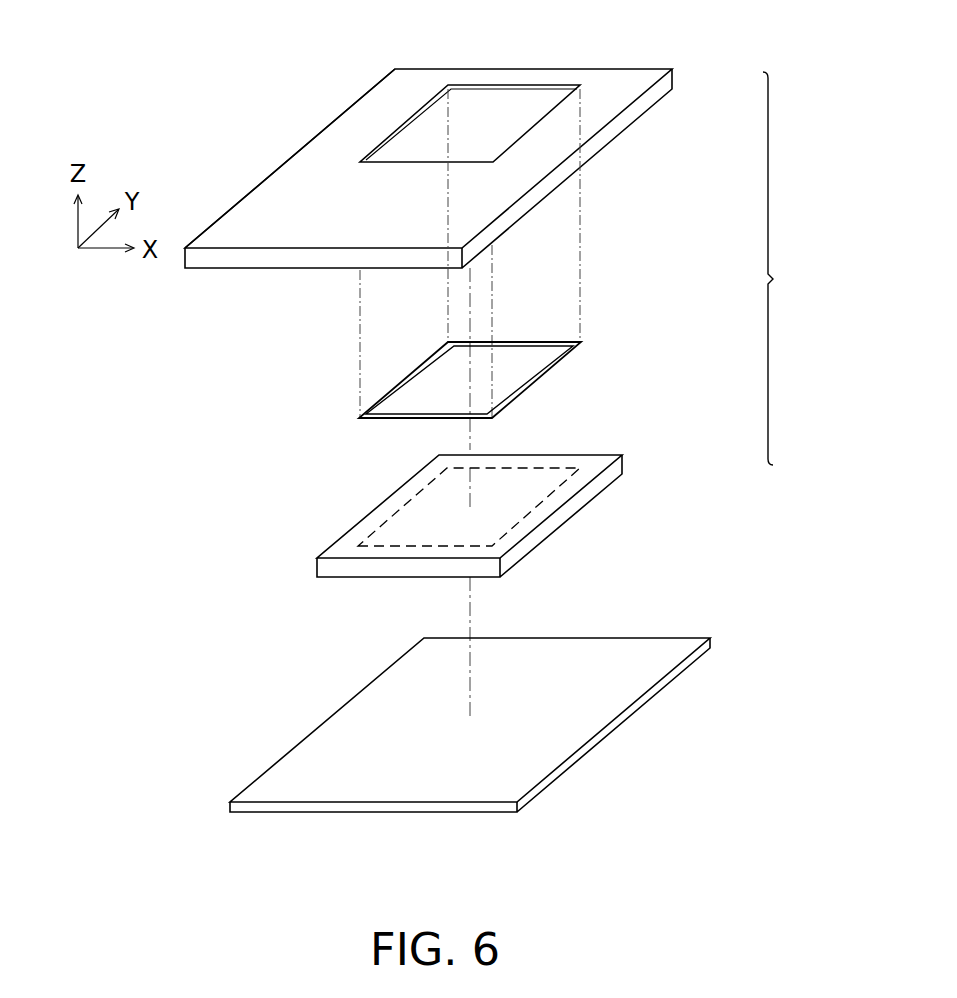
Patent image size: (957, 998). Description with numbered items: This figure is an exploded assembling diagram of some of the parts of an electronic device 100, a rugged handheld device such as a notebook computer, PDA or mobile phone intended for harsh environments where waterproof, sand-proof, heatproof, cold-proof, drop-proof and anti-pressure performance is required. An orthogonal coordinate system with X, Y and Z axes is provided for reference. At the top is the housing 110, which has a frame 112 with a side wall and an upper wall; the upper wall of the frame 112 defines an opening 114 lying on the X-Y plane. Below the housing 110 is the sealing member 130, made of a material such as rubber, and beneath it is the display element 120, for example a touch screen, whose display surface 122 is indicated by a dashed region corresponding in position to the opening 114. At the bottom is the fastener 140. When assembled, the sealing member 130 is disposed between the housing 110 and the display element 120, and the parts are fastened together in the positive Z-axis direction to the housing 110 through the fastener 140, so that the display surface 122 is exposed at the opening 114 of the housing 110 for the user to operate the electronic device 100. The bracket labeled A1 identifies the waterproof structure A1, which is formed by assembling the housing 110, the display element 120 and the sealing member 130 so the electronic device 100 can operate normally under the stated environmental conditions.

The electronic device 100 is at (725, 850).
The housing 110 is at (472, 139).
The frame 112 is at (335, 120).
The opening 114 is at (480, 130).
The display element 120 is at (523, 507).
The display surface 122 is at (380, 527).
The sealing member 130 is at (558, 340).
The fastener 140 is at (712, 643).
The waterproof structure A1 is at (783, 268).